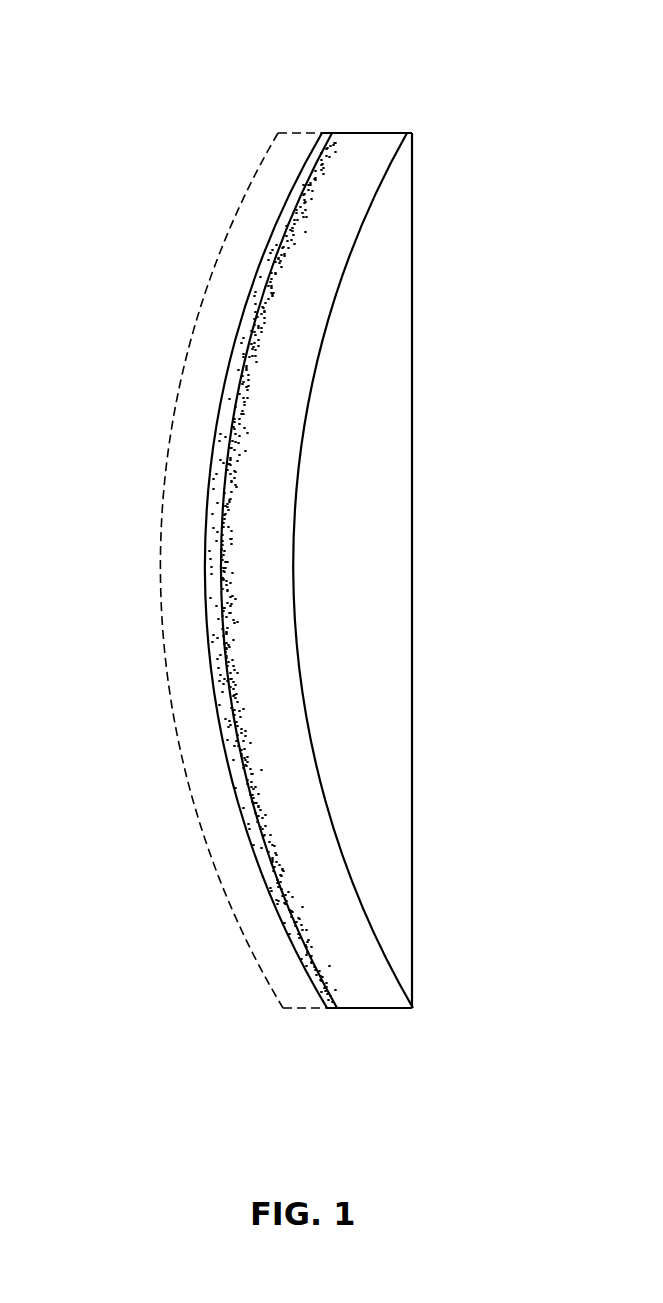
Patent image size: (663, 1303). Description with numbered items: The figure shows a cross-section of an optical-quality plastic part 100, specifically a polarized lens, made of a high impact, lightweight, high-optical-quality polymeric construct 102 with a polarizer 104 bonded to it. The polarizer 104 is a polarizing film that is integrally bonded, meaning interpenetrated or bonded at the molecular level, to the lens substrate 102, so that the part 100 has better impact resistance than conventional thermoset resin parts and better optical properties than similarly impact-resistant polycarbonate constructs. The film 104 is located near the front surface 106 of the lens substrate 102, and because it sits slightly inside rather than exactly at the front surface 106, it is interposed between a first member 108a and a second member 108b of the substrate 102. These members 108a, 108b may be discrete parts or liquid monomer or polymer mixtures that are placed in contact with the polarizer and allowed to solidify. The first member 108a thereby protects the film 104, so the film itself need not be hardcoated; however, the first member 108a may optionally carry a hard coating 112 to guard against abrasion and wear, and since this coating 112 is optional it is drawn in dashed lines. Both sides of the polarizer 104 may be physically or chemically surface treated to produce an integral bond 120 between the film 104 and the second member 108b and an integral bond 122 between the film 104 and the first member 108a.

The optical-quality plastic part 100 is at (208, 47).
The polymeric construct 102 is at (371, 1034).
The polarizer 104 is at (325, 142).
The front surface 106 is at (131, 675).
The first member 108a is at (327, 1010).
The second member 108b is at (403, 461).
The hard coating 112 is at (221, 888).
The integral bond 120 is at (257, 531).
The integral bond 122 is at (213, 517).